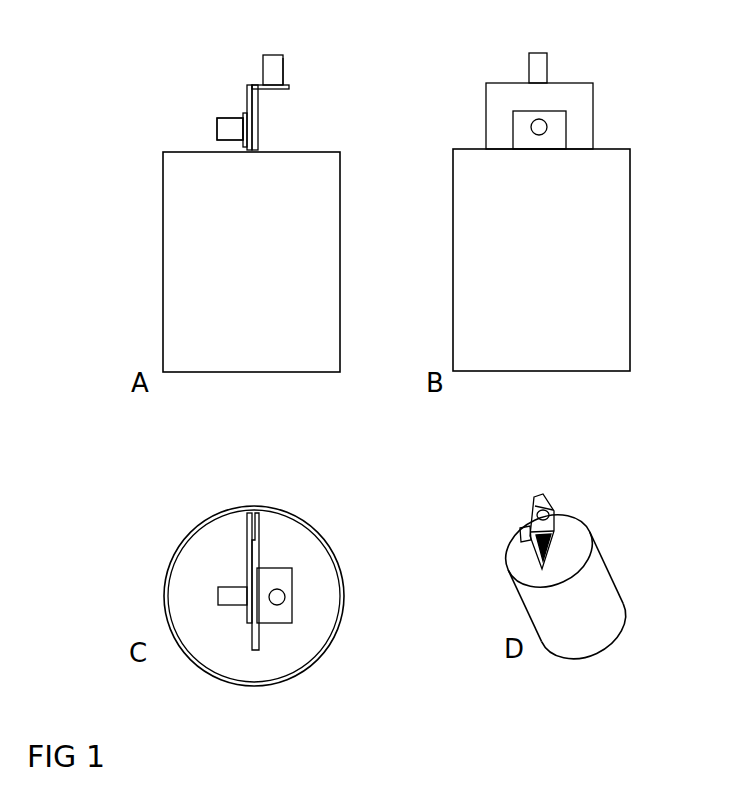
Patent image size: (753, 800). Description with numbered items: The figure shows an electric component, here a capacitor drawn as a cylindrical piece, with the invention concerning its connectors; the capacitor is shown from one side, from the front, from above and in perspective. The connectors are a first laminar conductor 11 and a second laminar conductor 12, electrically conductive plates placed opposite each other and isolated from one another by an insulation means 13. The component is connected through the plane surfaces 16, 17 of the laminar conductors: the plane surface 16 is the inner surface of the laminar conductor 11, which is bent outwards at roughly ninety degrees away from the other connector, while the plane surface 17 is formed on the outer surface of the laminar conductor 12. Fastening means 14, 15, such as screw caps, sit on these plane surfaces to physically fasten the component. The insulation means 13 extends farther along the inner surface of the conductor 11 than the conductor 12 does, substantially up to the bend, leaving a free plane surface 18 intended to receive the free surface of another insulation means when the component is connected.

The first laminar conductor 11 is at (283, 88).
The second laminar conductor 12 is at (240, 115).
The insulation means 13 is at (248, 88).
The fastening means 14 is at (283, 58).
The fastening means 15 is at (215, 130).
The plane surface 16 is at (288, 85).
The plane surface 17 is at (235, 143).
The free plane surface 18 is at (246, 97).